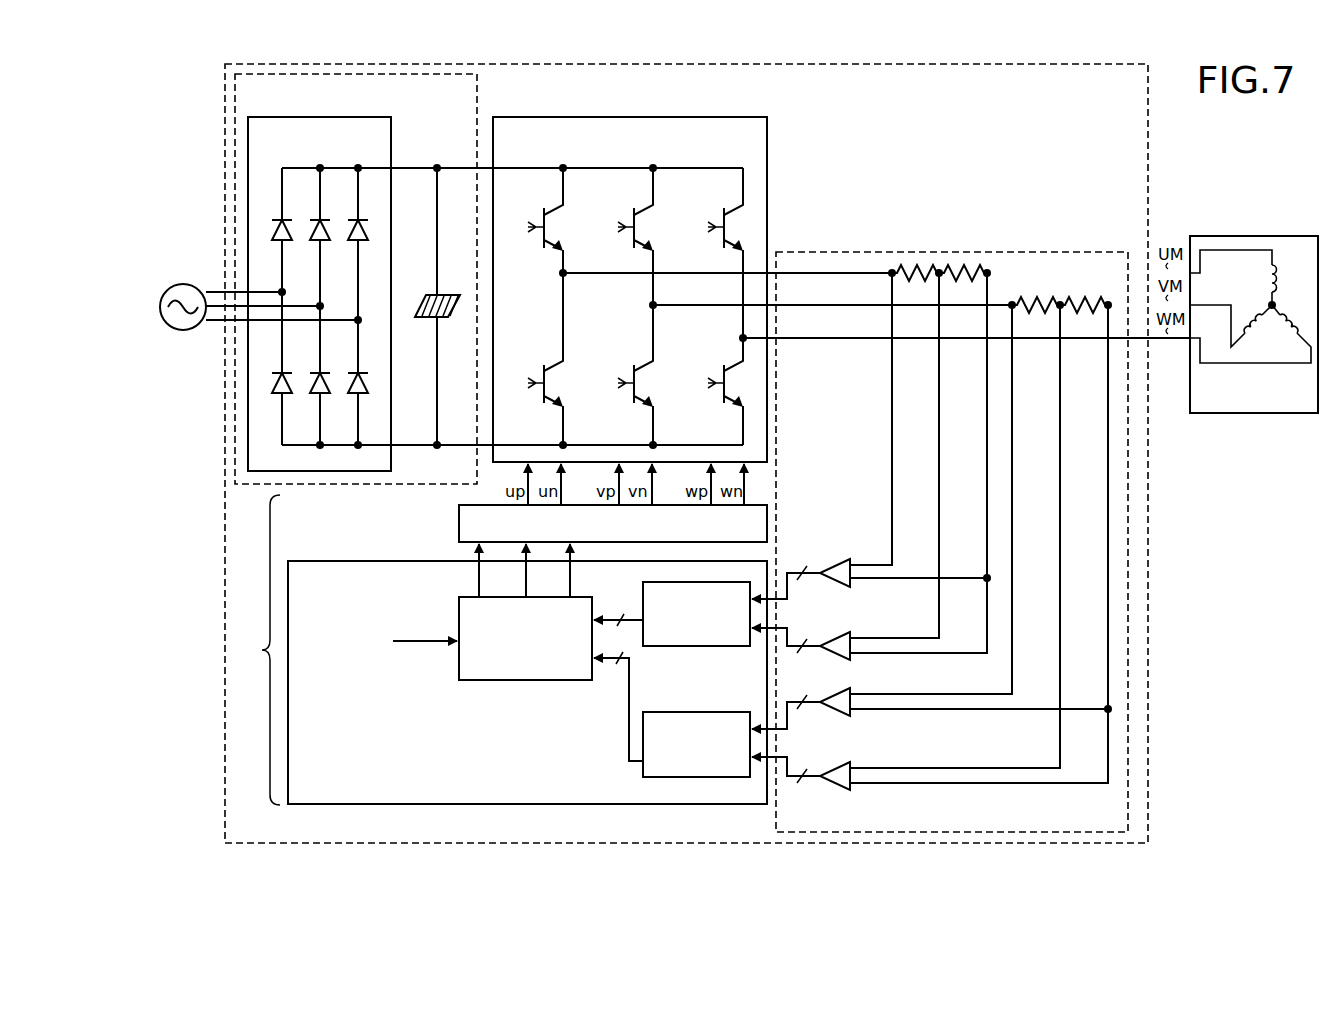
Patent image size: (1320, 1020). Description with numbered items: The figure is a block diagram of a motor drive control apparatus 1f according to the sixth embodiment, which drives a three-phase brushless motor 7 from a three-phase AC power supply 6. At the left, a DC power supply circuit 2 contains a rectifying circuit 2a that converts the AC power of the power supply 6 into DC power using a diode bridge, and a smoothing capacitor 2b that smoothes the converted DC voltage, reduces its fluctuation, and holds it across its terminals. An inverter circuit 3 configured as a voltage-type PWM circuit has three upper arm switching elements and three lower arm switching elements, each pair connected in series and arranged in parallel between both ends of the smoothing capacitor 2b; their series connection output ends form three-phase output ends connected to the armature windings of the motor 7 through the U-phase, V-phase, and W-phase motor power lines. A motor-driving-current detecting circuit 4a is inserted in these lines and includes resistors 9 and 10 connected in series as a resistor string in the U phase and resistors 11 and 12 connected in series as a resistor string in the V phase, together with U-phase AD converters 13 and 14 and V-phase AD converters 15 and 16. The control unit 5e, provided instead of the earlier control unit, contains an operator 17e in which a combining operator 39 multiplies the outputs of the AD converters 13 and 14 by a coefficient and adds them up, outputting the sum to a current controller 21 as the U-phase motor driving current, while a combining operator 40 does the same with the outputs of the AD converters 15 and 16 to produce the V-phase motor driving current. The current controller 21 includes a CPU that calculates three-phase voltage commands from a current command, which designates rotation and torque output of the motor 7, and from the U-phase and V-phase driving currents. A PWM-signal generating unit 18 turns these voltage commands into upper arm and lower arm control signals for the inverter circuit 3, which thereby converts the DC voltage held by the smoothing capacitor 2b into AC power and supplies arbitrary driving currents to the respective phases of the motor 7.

The motor drive control apparatus 1f is at (225, 814).
The DC power supply circuit 2 is at (477, 97).
The rectifying circuit 2a is at (391, 132).
The smoothing capacitor 2b is at (425, 294).
The inverter circuit 3 is at (767, 132).
The motor-driving-current detecting circuit 4a is at (776, 813).
The control unit 5e is at (259, 650).
The power supply 6 is at (186, 283).
The motor 7 is at (1278, 236).
The resistor 9 is at (966, 265).
The resistor 10 is at (918, 265).
The resistor 11 is at (1086, 297).
The resistor 12 is at (1038, 297).
The AD converter 13 is at (852, 634).
The AD converter 14 is at (834, 562).
The AD converter 15 is at (852, 764).
The AD converter 16 is at (852, 690).
The operator 17e is at (318, 561).
The PWM-signal generating unit 18 is at (459, 524).
The current controller 21 is at (540, 680).
The combining operator 39 is at (668, 646).
The combining operator 40 is at (668, 712).